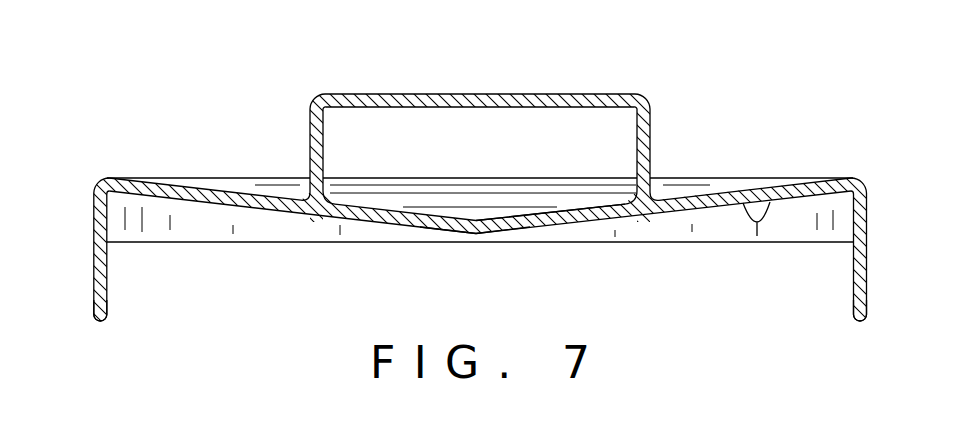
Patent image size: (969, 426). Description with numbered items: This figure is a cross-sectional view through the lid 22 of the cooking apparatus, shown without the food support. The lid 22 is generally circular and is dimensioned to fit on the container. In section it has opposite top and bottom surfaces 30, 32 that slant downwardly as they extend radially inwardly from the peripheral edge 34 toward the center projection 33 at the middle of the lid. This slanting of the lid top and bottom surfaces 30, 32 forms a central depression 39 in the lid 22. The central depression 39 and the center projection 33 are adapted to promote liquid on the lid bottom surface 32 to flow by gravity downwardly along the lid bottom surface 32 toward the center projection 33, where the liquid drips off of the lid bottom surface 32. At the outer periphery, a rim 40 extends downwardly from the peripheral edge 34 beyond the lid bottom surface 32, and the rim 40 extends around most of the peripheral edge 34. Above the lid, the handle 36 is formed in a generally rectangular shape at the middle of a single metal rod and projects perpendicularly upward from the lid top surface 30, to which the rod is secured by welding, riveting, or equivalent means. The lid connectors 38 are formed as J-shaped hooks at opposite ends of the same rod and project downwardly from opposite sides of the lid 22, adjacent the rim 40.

The lid 22 is at (740, 62).
The lid top surface 30 is at (278, 177).
The lid bottom surface 32 is at (757, 222).
The center projection 33 is at (477, 236).
The peripheral edge 34 is at (856, 182).
The handle 36 is at (394, 94).
The lid connectors 38 is at (93, 286).
The central depression 39 is at (512, 222).
The rim 40 is at (106, 222).